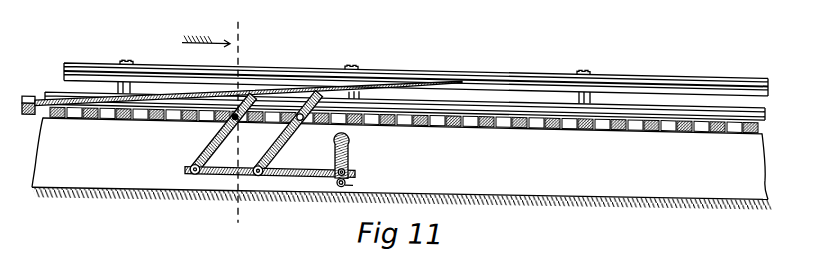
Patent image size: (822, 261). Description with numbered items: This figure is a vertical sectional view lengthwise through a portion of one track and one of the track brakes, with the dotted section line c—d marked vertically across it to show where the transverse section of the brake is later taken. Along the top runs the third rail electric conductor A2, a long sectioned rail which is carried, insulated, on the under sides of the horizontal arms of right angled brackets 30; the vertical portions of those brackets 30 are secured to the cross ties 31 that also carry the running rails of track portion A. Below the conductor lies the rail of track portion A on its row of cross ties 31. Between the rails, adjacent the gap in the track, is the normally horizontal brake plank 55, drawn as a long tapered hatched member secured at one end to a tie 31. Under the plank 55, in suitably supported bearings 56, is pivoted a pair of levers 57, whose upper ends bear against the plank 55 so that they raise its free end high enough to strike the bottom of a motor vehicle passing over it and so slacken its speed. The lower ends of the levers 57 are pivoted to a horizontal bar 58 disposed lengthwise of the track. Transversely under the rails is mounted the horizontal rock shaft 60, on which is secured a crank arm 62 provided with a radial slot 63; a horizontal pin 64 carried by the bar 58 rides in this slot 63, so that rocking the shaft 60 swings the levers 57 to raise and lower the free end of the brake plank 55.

The right angled bracket 30 is at (355, 58).
The cross tie 31 is at (615, 117).
The plank 55 is at (457, 72).
The bearing 56 is at (226, 119).
The lever 57 is at (235, 138).
The horizontal bar 58 is at (295, 172).
The rock shaft 60 is at (352, 136).
The crank arm 62 is at (348, 147).
The radial slot 63 is at (353, 179).
The horizontal pin 64 is at (335, 175).
The track portion A is at (687, 94).
The electric conductor A2 is at (653, 50).
The section line c-d c is at (236, 62).
The section line c- d is at (233, 189).